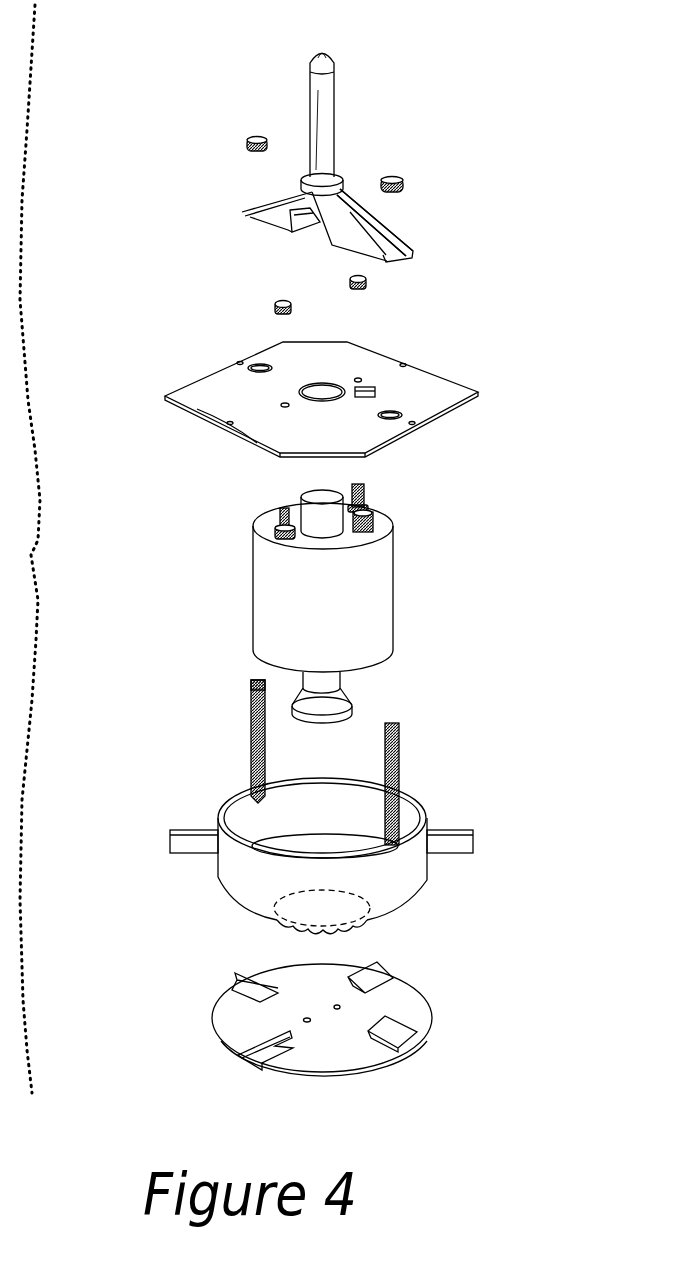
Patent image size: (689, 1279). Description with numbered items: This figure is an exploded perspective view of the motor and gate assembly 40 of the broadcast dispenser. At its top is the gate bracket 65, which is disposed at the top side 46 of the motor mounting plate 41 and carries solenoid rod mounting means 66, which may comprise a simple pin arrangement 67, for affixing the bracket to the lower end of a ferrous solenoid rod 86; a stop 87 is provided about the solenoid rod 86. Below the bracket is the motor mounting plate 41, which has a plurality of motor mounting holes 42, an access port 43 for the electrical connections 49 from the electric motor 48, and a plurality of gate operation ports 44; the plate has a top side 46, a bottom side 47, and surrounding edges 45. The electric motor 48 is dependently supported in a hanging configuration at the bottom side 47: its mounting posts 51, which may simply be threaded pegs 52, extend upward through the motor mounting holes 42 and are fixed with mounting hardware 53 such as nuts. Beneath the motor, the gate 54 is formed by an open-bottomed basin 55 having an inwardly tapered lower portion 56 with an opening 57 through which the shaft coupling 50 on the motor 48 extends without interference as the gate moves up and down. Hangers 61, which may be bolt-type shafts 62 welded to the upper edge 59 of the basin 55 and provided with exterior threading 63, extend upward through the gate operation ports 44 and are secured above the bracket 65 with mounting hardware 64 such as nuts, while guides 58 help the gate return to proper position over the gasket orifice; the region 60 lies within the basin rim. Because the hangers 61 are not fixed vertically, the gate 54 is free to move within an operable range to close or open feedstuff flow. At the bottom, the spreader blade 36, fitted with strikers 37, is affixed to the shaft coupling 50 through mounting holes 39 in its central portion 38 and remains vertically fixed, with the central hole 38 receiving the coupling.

The spreader blade 36 is at (442, 1036).
The strikers 37 is at (380, 972).
The central portion 38 is at (325, 1023).
The mounting holes 39 is at (304, 1020).
The motor and gate assembly 40 is at (508, 183).
The motor mounting plate 41 is at (457, 395).
The motor mounting holes 42 is at (358, 378).
The access port 43 is at (370, 398).
The gate operation ports 44 is at (259, 365).
The plate edge 45 is at (197, 409).
The top side 46 is at (210, 382).
The bottom side 47 is at (443, 434).
The electric motor 48 is at (358, 607).
The electrical connections 49 is at (373, 523).
The shaft coupling 50 is at (340, 698).
The mounting posts 51 is at (274, 532).
The threaded pegs 52 is at (364, 487).
The mounting hardware 53 is at (283, 302).
The gate 54 is at (449, 799).
The open-bottomed basin 55 is at (407, 877).
The inwardly tapered lower portion 56 is at (283, 936).
The opening 57 is at (322, 893).
The guides 58 is at (177, 840).
The upper edge 59 is at (302, 776).
The bowl rim 60 is at (307, 808).
The hangers 61 is at (250, 725).
The shafts 62 is at (250, 688).
The exterior threading 63 is at (401, 749).
The mounting hardware 64 is at (256, 137).
The gate bracket 65 is at (240, 183).
The solenoid rod mounting means 66 is at (357, 167).
The pin arrangement 67 is at (313, 200).
The solenoid rod 86 is at (322, 62).
The stop 87 is at (322, 173).